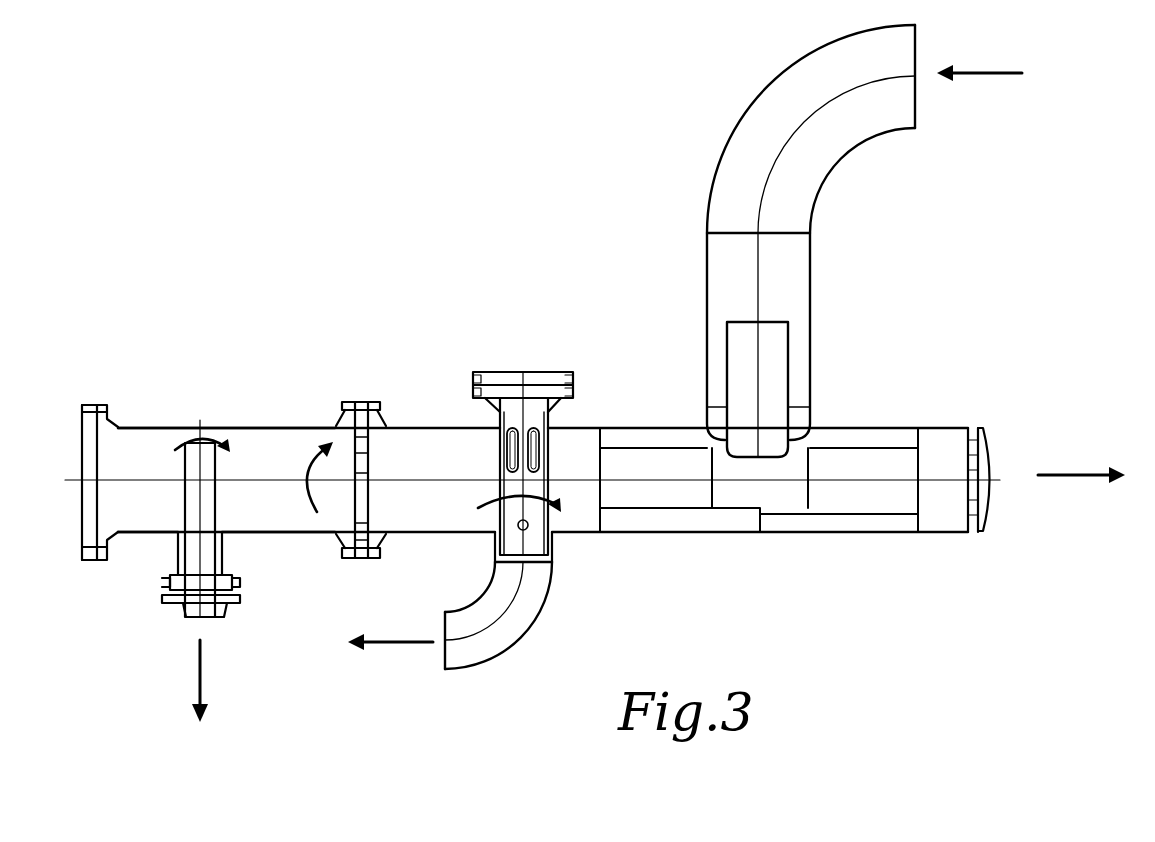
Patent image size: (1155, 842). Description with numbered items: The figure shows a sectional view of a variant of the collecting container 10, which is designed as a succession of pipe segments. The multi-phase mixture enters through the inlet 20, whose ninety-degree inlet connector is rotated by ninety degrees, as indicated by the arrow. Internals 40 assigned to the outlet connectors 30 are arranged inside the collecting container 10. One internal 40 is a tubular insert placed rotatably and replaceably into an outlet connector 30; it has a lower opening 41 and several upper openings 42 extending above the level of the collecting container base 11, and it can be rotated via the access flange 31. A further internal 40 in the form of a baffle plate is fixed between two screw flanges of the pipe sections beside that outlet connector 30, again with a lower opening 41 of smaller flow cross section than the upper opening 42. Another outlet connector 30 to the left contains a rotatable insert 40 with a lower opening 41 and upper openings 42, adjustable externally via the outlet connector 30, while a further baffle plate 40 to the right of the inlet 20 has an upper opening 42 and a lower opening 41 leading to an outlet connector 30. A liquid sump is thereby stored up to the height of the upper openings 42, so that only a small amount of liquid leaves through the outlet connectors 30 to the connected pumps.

The collecting container 10 is at (593, 428).
The collecting container base 11 is at (298, 525).
The inlet 20 is at (740, 113).
The outlet connector 30 is at (178, 607).
The access flange 31 is at (490, 376).
The internal 40 is at (77, 487).
The lower opening 41 is at (222, 523).
The upper opening 42 is at (183, 453).